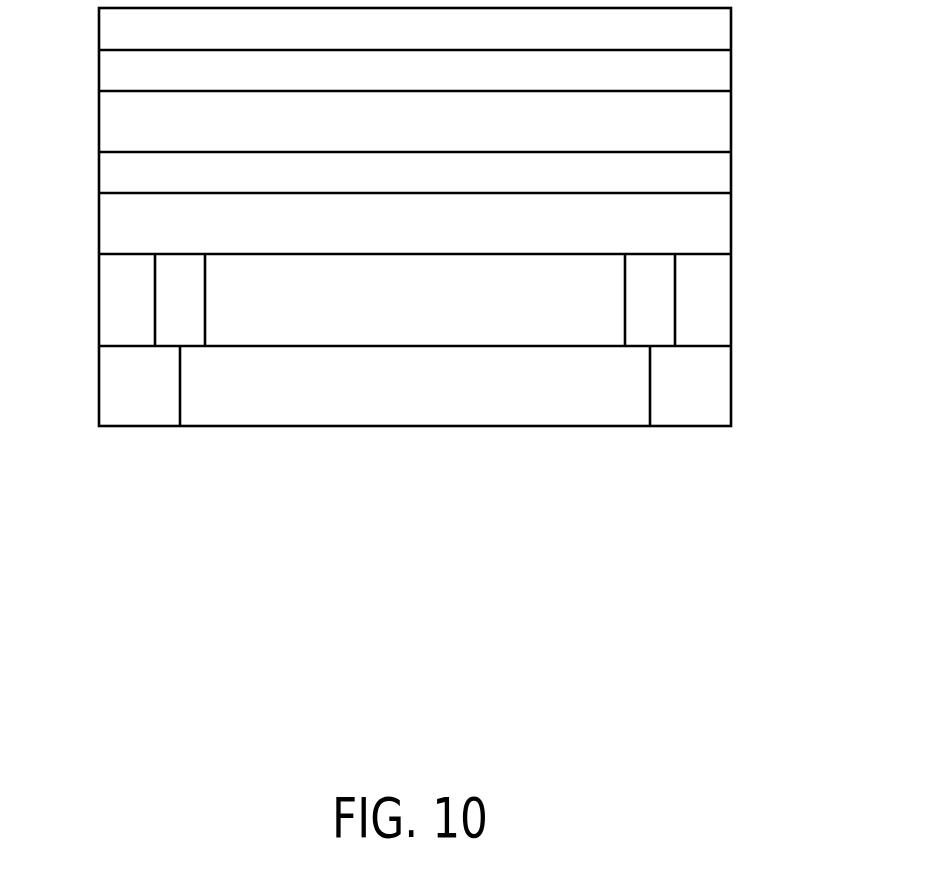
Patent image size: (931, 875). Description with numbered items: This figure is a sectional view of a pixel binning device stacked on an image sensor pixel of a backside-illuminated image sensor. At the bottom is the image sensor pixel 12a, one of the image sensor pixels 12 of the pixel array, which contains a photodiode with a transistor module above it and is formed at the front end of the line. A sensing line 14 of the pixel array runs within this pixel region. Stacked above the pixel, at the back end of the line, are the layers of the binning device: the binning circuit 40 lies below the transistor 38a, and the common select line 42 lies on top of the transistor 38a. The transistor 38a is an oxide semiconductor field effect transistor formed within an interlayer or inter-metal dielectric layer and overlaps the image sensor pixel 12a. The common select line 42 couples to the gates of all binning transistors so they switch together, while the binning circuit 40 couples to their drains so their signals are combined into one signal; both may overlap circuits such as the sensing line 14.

The image sensor pixel 12 is at (263, 327).
The image sensor pixel 12a is at (740, 254).
The sensing line 14 is at (652, 269).
The transistor 38a is at (108, 121).
The binning circuit 40 is at (108, 173).
The common select line 42 is at (108, 70).